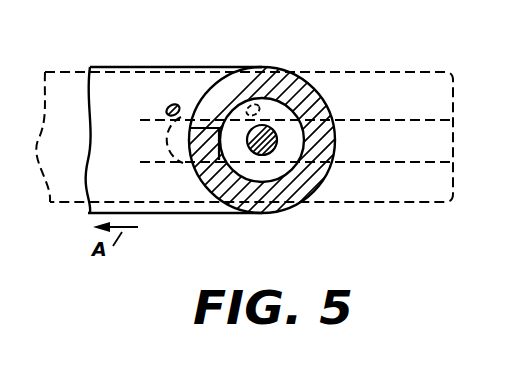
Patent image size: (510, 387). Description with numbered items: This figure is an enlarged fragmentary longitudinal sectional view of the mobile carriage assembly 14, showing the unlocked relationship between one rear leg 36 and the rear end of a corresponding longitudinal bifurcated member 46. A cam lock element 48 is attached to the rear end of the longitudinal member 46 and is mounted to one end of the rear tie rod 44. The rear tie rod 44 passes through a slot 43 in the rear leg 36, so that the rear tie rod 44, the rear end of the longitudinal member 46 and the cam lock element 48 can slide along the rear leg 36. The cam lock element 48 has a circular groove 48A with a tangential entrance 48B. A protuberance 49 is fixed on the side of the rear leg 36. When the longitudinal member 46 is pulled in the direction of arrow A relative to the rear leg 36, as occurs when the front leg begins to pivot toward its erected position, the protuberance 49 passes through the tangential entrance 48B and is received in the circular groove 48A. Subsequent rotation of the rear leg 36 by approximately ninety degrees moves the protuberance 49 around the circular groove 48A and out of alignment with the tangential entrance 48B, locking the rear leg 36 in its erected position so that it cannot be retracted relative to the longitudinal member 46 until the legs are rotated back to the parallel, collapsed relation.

The mobile carriage assembly 14 is at (397, 55).
The rear leg 36 is at (383, 204).
The slot 43 is at (340, 162).
The rear tie rod 44 is at (236, 173).
The longitudinal bifurcated member 46 is at (98, 67).
The cam lock element 48 is at (306, 76).
The circular groove 48A is at (259, 179).
The tangential entrance 48B is at (219, 100).
The protuberance 49 is at (168, 111).